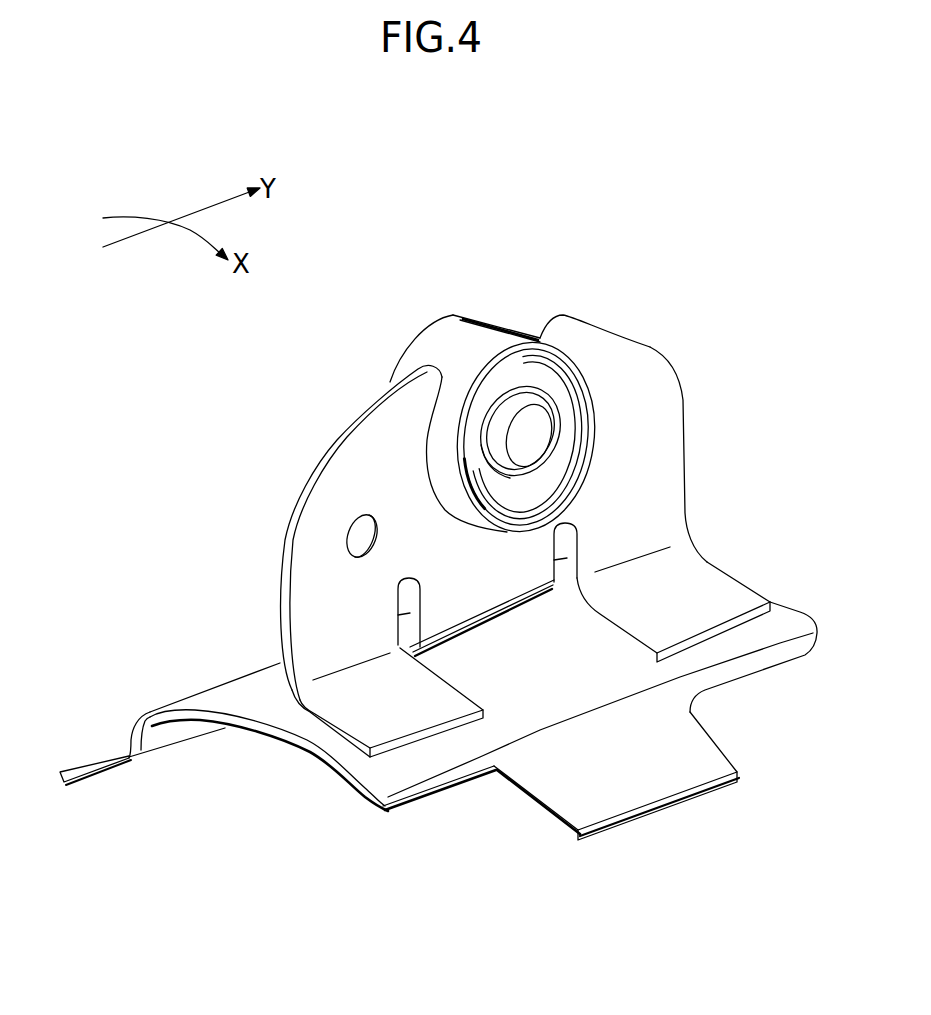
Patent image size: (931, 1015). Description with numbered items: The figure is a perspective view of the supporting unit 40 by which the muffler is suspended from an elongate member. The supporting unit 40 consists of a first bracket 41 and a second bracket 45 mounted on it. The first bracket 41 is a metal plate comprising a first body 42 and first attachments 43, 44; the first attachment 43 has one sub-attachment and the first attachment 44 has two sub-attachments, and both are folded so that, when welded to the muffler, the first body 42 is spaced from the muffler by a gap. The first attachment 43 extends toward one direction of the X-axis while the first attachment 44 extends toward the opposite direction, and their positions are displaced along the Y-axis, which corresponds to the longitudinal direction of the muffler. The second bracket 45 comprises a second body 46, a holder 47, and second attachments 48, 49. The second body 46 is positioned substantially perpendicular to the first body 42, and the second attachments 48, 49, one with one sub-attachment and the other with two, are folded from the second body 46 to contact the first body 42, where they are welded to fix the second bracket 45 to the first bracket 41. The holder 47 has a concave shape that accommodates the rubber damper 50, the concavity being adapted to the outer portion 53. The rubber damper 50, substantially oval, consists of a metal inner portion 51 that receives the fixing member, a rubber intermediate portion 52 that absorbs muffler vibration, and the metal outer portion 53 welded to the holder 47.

The supporting unit 40 is at (302, 400).
The first bracket 41 is at (213, 683).
The first body 42 is at (792, 613).
The first attachment 43 is at (663, 787).
The first attachment 44 is at (80, 770).
The second bracket 45 is at (713, 473).
The second body 46 is at (667, 394).
The holder 47 is at (615, 345).
The second attachment 48 is at (447, 700).
The second attachment 49 is at (487, 588).
The rubber damper 50 is at (435, 313).
The inner portion 51 is at (533, 403).
The intermediate portion 52 is at (504, 382).
The outer portion 53 is at (490, 380).